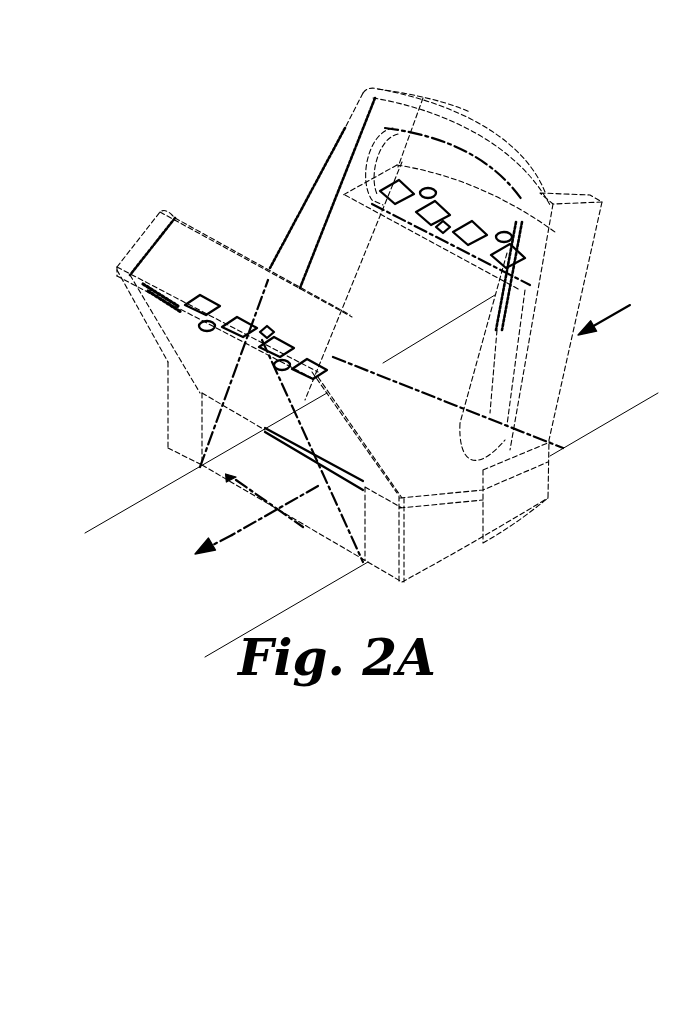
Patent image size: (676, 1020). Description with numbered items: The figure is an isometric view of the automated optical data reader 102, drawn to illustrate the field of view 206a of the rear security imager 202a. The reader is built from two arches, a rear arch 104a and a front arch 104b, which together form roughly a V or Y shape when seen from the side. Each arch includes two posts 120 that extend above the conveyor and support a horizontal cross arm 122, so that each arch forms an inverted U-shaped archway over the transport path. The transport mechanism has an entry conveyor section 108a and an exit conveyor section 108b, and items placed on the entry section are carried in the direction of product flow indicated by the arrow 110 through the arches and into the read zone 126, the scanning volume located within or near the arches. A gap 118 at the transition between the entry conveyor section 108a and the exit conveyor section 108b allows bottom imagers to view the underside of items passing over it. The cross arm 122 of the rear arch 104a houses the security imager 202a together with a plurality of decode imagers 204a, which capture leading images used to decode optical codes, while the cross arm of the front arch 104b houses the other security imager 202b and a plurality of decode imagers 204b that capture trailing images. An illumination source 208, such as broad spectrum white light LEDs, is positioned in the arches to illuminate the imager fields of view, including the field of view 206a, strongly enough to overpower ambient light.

The automated optical data reader 102 is at (541, 100).
The rear arch 104a is at (150, 217).
The front arch 104b is at (380, 88).
The entry conveyor section 108a is at (623, 370).
The exit conveyor section 108b is at (188, 589).
The arrow indicating direction of product flow 110 is at (265, 517).
The gap 118 is at (310, 440).
The posts 120 is at (170, 358).
The cross arm 122 is at (188, 242).
The read zone 126 is at (230, 478).
The security imager 202a is at (267, 327).
The security imager 202b is at (444, 232).
The decode imagers 204a is at (240, 318).
The decode imagers 204b is at (390, 186).
The field of view 206a is at (421, 382).
The illumination source 208 is at (280, 362).